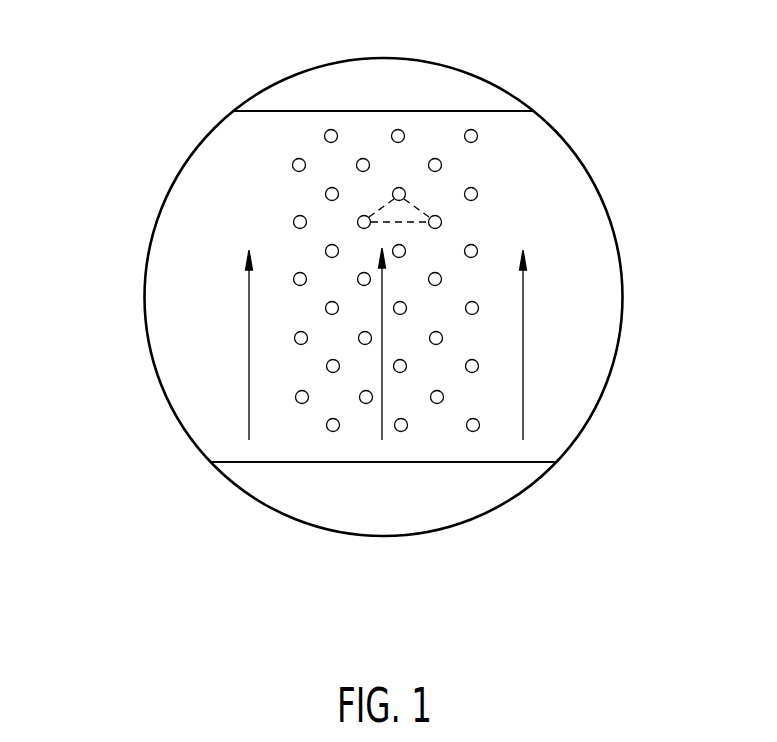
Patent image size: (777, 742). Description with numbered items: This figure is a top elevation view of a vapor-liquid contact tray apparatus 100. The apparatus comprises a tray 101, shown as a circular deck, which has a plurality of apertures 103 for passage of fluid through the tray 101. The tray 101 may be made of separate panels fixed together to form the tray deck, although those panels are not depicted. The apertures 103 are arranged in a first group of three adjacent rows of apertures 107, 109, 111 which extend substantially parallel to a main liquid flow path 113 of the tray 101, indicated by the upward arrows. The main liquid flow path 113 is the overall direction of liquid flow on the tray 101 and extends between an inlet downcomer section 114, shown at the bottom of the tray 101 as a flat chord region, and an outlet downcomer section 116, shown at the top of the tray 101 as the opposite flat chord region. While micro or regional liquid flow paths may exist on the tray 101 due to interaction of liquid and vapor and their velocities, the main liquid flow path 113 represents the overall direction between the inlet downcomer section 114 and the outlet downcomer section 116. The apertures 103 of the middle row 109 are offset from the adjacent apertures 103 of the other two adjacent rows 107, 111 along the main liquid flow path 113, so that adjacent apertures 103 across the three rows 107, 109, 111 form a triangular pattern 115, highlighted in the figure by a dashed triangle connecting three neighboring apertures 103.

The vapor-liquid contact tray apparatus 100 is at (512, 65).
The tray 101 is at (570, 147).
The apertures 103 is at (294, 217).
The row of apertures 107 is at (402, 432).
The middle row of apertures 109 is at (436, 404).
The row of apertures 111 is at (475, 431).
The main liquid flow path 113 is at (248, 340).
The inlet downcomer section 114 is at (500, 477).
The triangular pattern 115 is at (418, 207).
The outlet downcomer section 116 is at (302, 90).